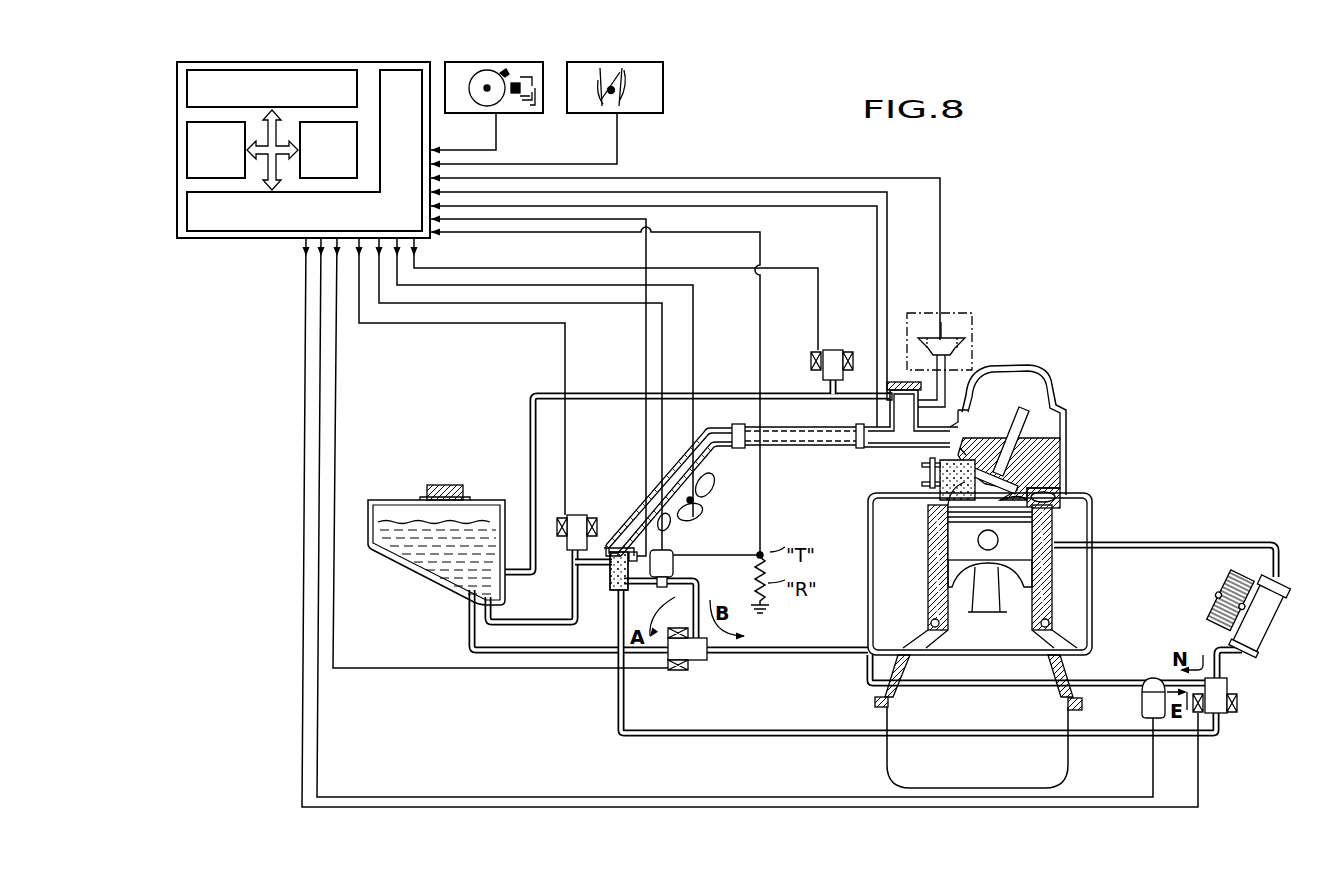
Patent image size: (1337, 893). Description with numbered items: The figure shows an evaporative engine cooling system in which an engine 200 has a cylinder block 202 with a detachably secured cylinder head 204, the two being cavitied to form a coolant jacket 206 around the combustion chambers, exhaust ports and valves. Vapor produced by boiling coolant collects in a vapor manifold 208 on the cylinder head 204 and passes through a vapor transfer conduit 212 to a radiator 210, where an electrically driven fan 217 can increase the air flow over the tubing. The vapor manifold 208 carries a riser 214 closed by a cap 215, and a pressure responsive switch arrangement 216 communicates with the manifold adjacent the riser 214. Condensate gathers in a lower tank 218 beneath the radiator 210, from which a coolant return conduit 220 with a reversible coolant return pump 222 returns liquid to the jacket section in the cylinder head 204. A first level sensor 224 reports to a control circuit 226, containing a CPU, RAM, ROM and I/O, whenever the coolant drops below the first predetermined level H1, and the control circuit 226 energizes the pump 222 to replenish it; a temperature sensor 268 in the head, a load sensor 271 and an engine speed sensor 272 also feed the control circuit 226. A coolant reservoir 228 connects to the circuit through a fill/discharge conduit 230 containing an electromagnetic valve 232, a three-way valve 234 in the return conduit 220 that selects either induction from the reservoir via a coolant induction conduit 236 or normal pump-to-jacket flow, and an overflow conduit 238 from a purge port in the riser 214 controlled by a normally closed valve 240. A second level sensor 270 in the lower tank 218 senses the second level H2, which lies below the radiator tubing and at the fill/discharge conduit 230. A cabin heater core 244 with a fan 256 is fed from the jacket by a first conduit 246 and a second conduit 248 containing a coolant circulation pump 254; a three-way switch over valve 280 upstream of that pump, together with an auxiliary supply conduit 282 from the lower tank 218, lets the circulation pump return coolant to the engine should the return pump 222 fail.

The engine 200 is at (985, 581).
The cylinder block 202 is at (1030, 625).
The cylinder head 204 is at (1068, 443).
The coolant jacket 206 is at (1040, 572).
The vapor manifold 208 is at (922, 465).
The radiator 210 is at (678, 470).
The vapor transfer conduit 212 is at (782, 424).
The riser 214 is at (890, 408).
The cap 215 is at (903, 382).
The pressure responsive switch arrangement 216 is at (975, 342).
The fan 217 is at (703, 522).
The lower tank 218 is at (612, 588).
The coolant return conduit 220 is at (826, 648).
The coolant return pump 222 is at (675, 558).
The first level sensor 224 is at (922, 484).
The control circuit 226 is at (212, 240).
The coolant reservoir 228 is at (415, 572).
The coolant fill/discharge conduit 230 is at (532, 626).
The electromagnetic valve 232 is at (560, 515).
The three-way valve 234 is at (700, 662).
The coolant induction conduit 236 is at (468, 633).
The overflow conduit 238 is at (632, 394).
The ON/OFF valve 240 is at (837, 347).
The heater core 244 is at (1258, 640).
The first conduit 246 is at (1148, 542).
The second conduit 248 is at (948, 686).
The coolant circulation pump 254 is at (1152, 678).
The fan 256 is at (1220, 612).
The temperature sensor 268 is at (932, 490).
The second level sensor 270 is at (637, 580).
The load sensor 271 is at (652, 113).
The engine speed sensor 272 is at (528, 113).
The three-way switch over valve 280 is at (1232, 712).
The auxiliary supply conduit 282 is at (730, 736).
The first predetermined level H1 is at (962, 468).
The second level H2 is at (613, 550).